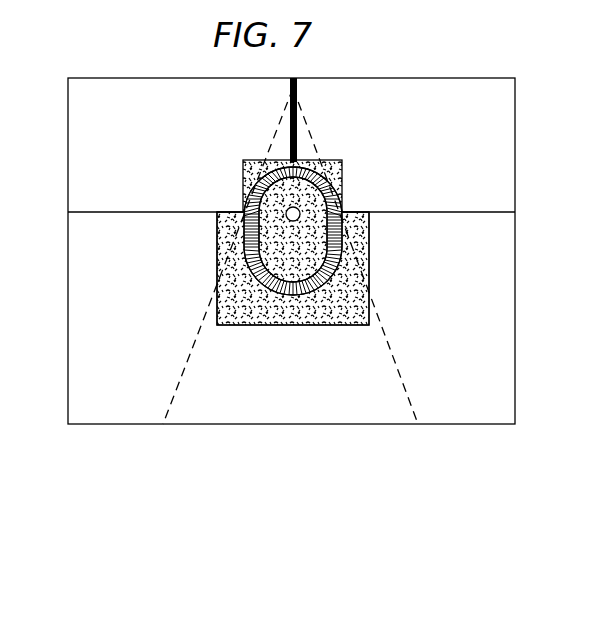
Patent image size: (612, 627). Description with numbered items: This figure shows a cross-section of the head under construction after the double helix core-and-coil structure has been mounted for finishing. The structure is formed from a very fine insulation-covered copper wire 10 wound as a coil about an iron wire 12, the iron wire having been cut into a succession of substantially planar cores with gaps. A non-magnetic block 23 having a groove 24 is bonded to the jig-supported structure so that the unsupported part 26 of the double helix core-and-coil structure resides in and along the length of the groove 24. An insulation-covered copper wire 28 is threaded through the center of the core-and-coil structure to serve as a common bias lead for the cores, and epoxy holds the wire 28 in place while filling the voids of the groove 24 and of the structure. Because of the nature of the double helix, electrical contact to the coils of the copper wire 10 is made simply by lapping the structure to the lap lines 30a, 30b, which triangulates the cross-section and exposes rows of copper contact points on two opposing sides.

The insulation-covered copper wire 10 is at (256, 161).
The iron wire 12 is at (273, 165).
The non-magnetic block 23 is at (466, 306).
The groove 24 is at (328, 325).
The unsupported part of the double helix core-and-coil structure 26 is at (222, 266).
The insulation-covered copper wire 28 is at (342, 200).
The lap line 30a is at (193, 341).
The lap line 30b is at (394, 350).